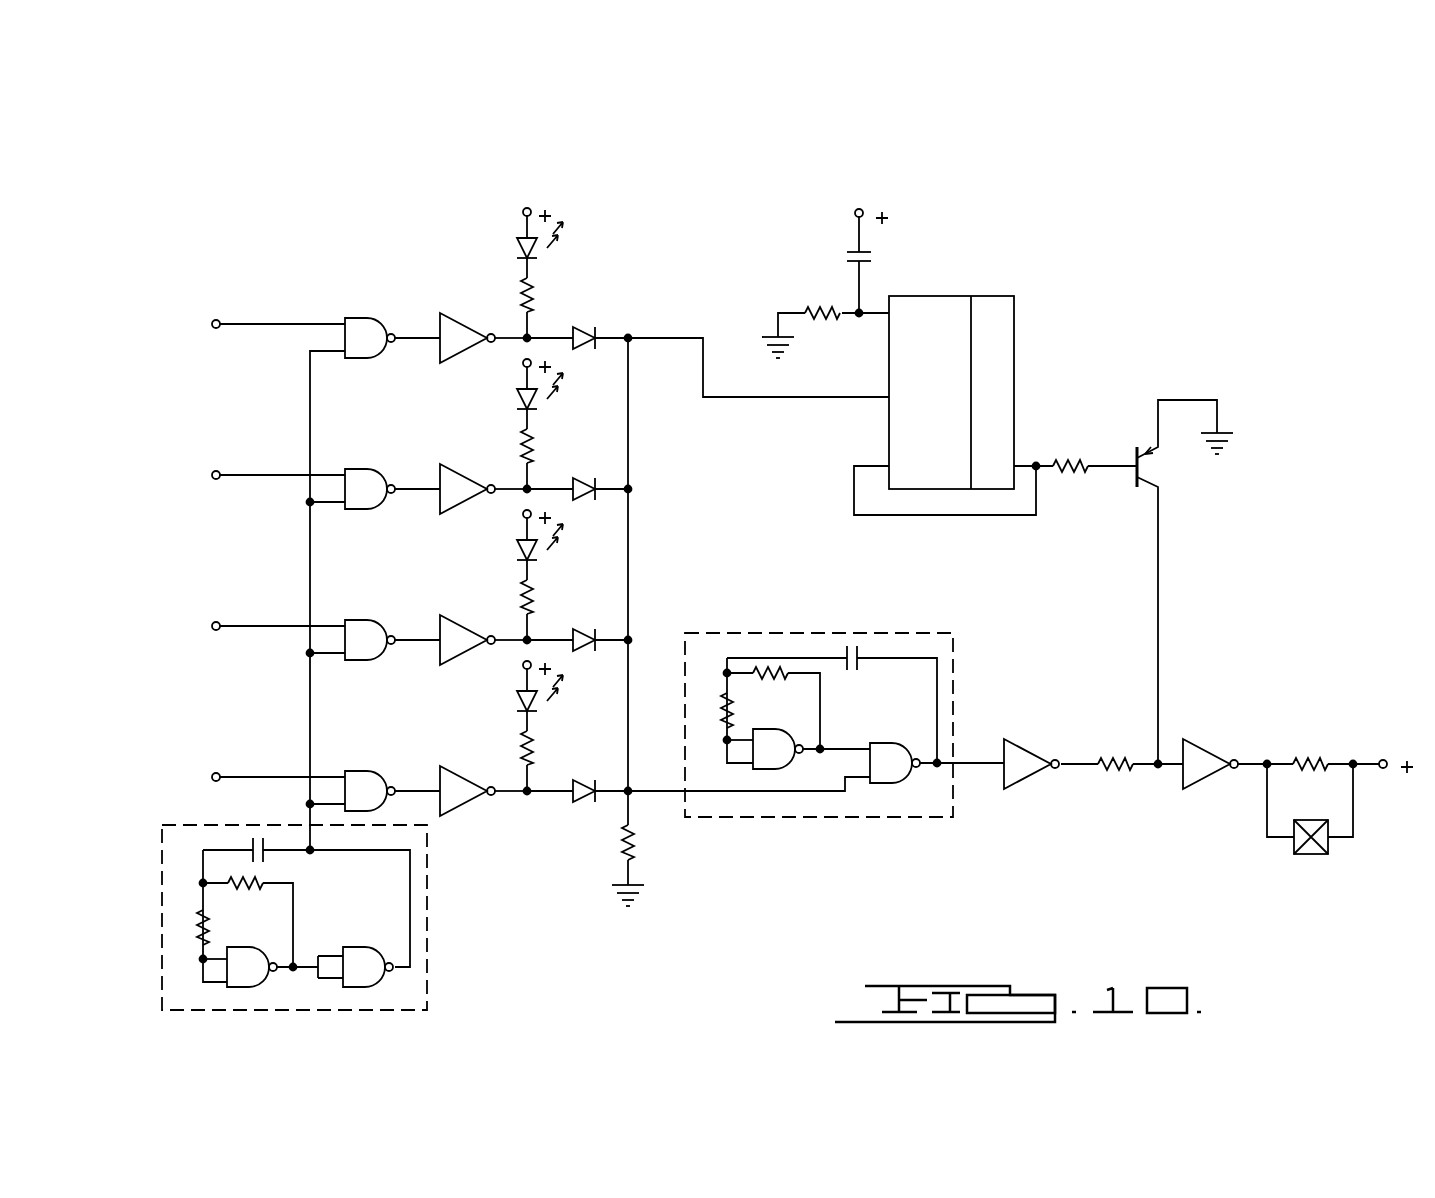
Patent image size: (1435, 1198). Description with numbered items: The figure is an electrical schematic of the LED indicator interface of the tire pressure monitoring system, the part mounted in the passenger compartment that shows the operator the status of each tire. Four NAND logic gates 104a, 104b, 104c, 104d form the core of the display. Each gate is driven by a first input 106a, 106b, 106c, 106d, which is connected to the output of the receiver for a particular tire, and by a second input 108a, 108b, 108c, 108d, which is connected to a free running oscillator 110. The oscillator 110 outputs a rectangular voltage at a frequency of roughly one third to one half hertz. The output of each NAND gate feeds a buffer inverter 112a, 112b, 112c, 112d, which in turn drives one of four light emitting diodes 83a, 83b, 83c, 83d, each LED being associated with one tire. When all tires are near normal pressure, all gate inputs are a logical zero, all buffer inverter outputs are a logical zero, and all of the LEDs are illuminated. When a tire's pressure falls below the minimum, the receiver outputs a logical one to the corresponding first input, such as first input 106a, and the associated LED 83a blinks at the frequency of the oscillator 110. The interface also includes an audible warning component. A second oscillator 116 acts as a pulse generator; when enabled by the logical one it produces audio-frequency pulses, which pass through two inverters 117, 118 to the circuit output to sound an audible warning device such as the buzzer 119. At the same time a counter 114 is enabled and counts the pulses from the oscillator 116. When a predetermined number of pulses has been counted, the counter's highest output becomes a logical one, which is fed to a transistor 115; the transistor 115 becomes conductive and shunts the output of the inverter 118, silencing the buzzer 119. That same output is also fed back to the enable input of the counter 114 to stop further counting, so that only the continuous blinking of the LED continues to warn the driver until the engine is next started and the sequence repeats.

The first input 106a is at (258, 323).
The first input 106b is at (248, 474).
The first input 106c is at (253, 625).
The first input 106d is at (264, 776).
The NAND logic gate 104a is at (374, 324).
The NAND logic gate 104b is at (361, 475).
The NAND logic gate 104c is at (362, 626).
The NAND logic gate 104d is at (365, 778).
The buffer inverter 112a is at (462, 324).
The buffer inverter 112b is at (462, 475).
The buffer inverter 112c is at (462, 626).
The buffer inverter 112d is at (462, 778).
The light emitting diode 83a is at (533, 262).
The light emitting diode 83b is at (533, 413).
The light emitting diode 83c is at (533, 564).
The light emitting diode 83d is at (533, 715).
The second input 108a is at (310, 378).
The second input 108b is at (306, 517).
The second input 108c is at (308, 675).
The second input 108d is at (308, 800).
The free running oscillator 110 is at (428, 935).
The counter 114 is at (1015, 335).
The transistor 115 is at (1137, 450).
The second oscillator 116 is at (765, 818).
The inverter 117 is at (1020, 783).
The inverter 118 is at (1193, 785).
The buzzer 119 is at (1298, 854).